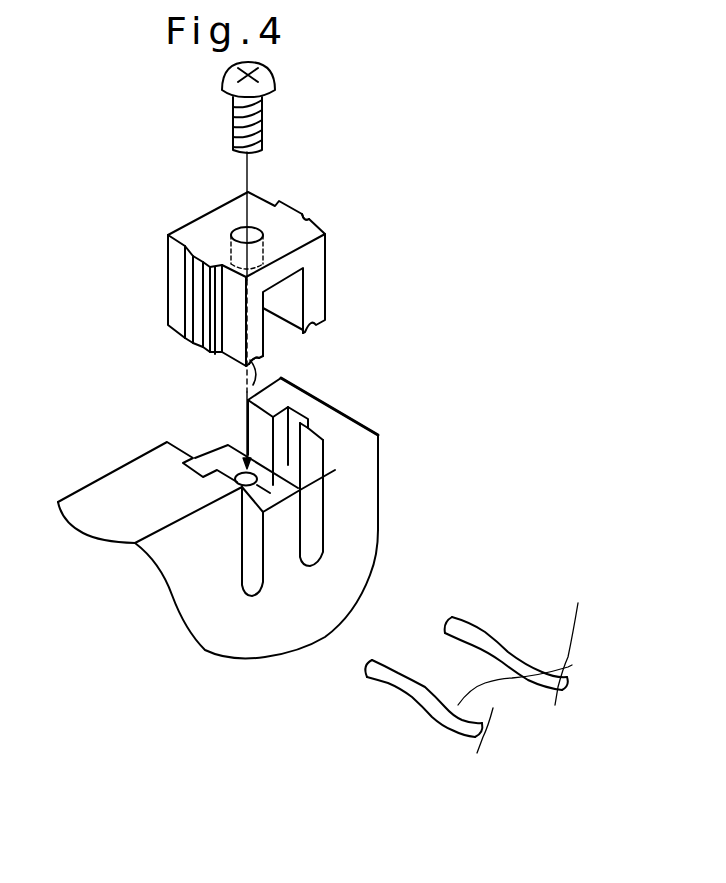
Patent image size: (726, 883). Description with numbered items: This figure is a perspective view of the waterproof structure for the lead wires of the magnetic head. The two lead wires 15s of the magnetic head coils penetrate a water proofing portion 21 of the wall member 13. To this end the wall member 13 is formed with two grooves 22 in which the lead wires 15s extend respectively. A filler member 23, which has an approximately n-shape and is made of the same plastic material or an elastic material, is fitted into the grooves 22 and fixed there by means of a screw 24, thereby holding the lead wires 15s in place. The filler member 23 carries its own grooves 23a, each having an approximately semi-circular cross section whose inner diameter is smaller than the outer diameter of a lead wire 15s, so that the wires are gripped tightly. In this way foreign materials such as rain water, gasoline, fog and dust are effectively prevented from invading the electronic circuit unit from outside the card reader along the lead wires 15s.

The wall member 13 is at (328, 413).
The lead wire 15s is at (507, 652).
The water proofing portion 21 is at (353, 497).
The groove 22 is at (250, 580).
The filler member 23 is at (313, 287).
The groove 23a is at (313, 329).
The screw 24 is at (263, 121).